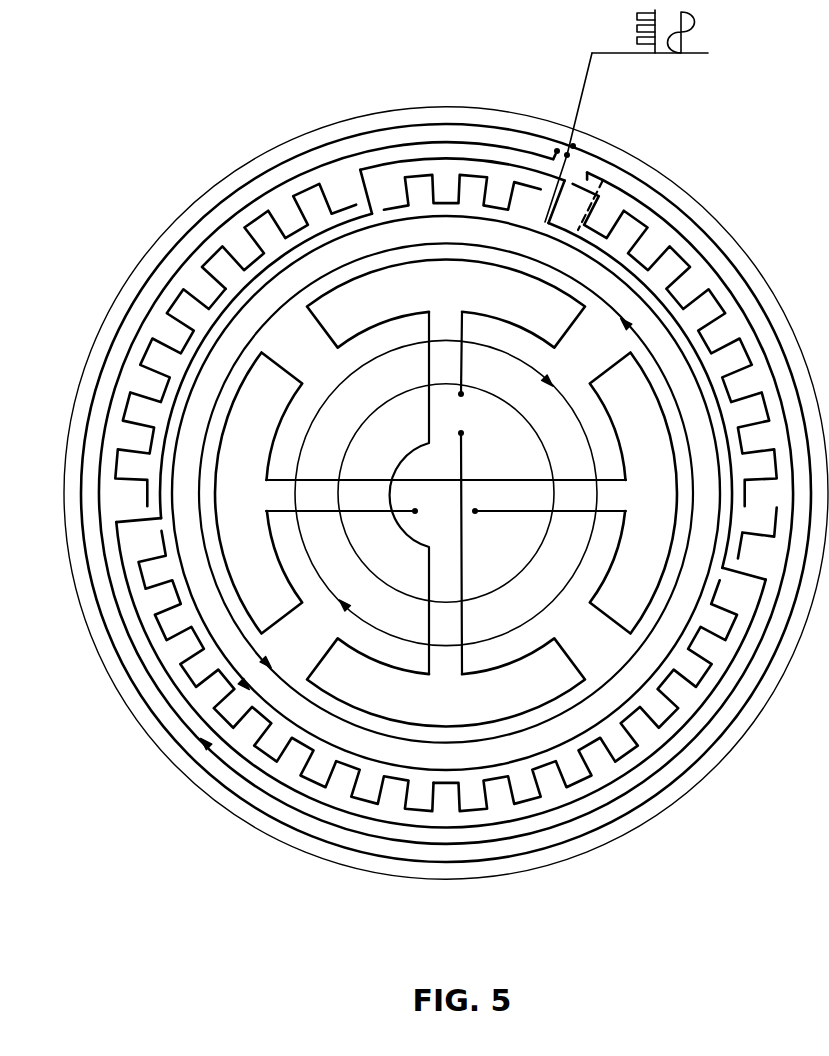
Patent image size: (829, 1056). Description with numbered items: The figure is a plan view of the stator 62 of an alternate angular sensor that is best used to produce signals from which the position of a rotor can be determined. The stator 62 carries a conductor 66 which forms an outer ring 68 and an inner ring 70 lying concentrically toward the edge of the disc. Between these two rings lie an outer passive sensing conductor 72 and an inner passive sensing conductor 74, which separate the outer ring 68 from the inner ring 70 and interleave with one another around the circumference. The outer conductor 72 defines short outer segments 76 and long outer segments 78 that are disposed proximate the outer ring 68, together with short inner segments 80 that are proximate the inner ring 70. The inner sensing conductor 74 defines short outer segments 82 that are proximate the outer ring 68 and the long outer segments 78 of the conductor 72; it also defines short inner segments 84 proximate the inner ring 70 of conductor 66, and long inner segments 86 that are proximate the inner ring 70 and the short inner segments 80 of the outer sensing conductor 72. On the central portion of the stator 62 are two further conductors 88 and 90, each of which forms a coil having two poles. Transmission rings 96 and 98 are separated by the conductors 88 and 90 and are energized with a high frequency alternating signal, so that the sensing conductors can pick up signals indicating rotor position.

The stator 62 is at (265, 158).
The conductor 66 is at (518, 150).
The outer ring 68 is at (415, 172).
The inner ring 70 is at (197, 302).
The outer passive sensing conductor 72 is at (232, 232).
The inner passive sensing conductor 74 is at (418, 174).
The short outer segments 76 is at (118, 437).
The long outer segments 78 is at (130, 578).
The short inner segments 80 is at (147, 412).
The short outer segments 82 is at (190, 577).
The short inner segments 84 is at (173, 660).
The long inner segments 86 is at (160, 497).
The conductor 88 is at (352, 699).
The conductor 90 is at (236, 572).
The transmission ring 96 is at (303, 700).
The transmission ring 98 is at (330, 392).